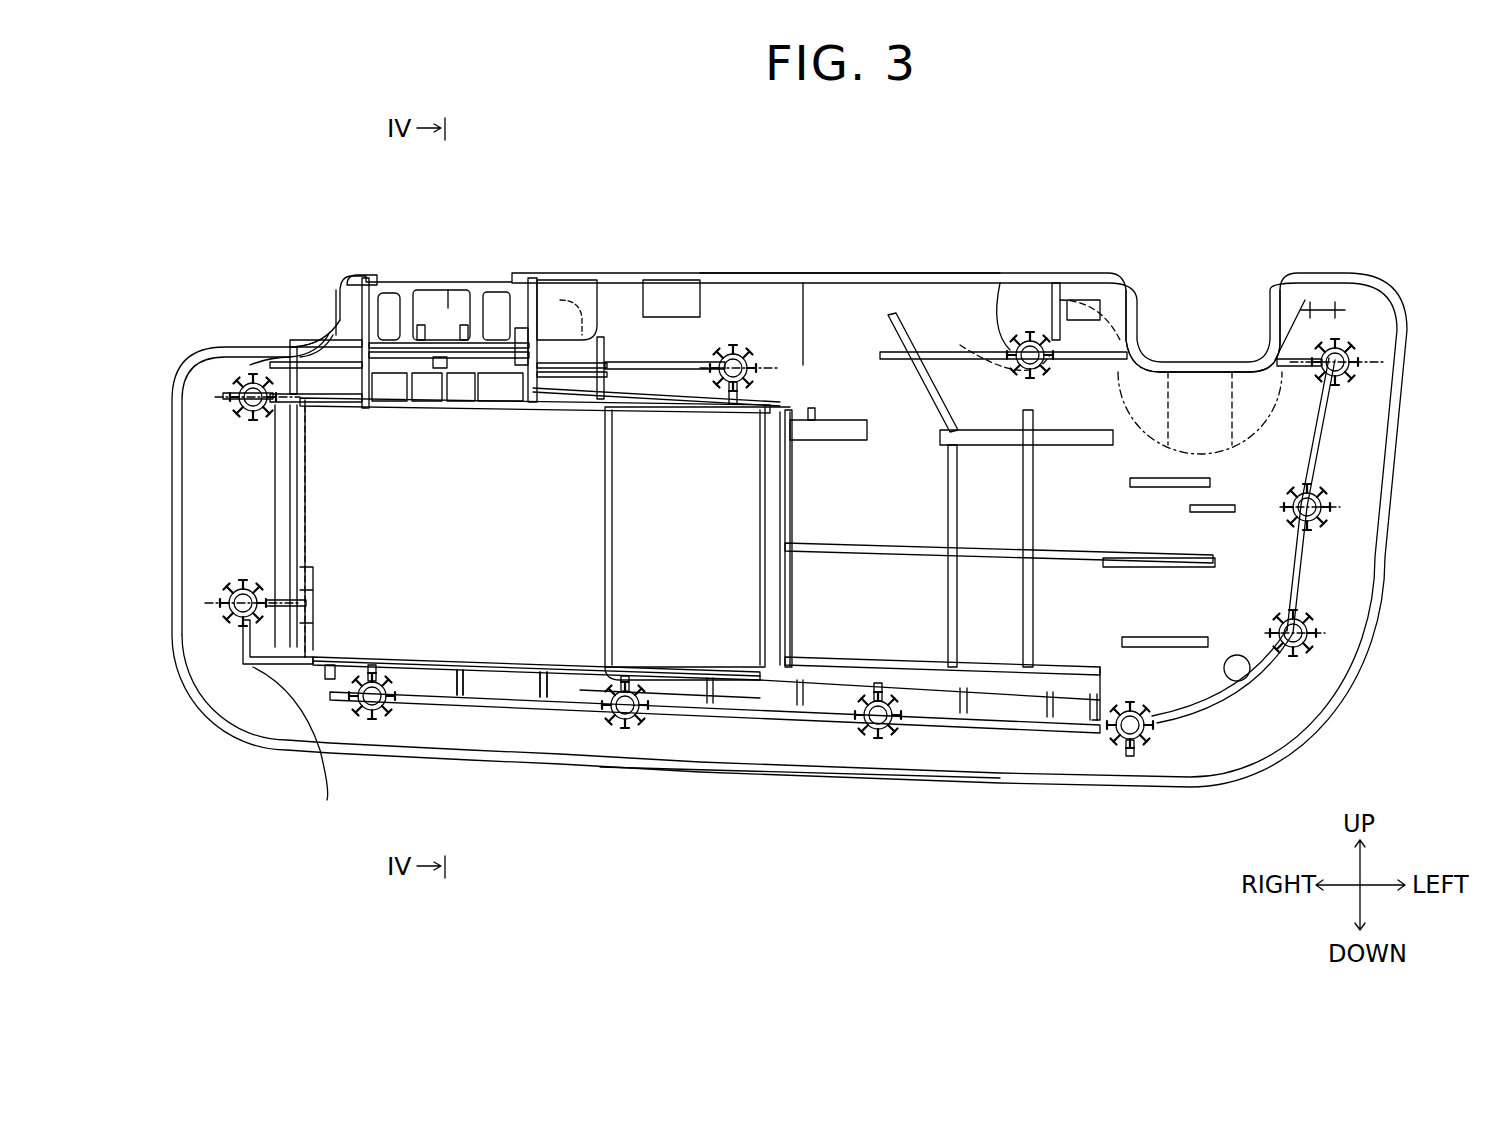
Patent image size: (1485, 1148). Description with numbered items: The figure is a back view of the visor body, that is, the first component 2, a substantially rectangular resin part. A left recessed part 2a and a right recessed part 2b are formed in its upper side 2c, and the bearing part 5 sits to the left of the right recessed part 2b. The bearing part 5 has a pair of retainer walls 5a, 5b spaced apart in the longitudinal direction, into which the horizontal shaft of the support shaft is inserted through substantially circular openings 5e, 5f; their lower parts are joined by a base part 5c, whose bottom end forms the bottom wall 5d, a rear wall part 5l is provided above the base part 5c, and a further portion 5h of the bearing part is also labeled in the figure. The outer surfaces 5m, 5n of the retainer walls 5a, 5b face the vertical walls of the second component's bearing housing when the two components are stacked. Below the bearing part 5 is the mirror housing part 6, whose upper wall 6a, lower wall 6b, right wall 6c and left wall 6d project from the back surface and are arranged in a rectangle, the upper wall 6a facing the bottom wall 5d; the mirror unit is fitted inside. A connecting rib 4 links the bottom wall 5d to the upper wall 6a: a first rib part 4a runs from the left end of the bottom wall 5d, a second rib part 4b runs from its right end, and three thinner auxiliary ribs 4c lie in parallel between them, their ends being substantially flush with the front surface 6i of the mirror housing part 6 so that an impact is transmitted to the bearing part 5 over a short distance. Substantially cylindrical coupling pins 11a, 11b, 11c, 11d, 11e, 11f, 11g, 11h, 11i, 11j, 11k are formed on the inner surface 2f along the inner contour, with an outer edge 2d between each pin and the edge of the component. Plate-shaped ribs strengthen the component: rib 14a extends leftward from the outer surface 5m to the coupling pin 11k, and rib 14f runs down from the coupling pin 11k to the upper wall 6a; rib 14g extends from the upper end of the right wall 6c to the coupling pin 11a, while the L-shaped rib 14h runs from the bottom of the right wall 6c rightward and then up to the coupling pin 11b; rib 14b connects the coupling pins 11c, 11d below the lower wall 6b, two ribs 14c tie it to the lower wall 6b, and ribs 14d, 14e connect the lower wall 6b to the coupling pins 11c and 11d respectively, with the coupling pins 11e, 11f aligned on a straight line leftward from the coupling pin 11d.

The first component 2 is at (801, 788).
The left recessed part 2a is at (1197, 358).
The right recessed part 2b is at (336, 330).
The upper side 2c is at (862, 280).
The outer edge 2d is at (830, 760).
The inner surface 2f is at (871, 384).
The connecting rib 4 is at (436, 412).
The first rib part 4a is at (515, 402).
The second rib part 4b is at (372, 402).
The auxiliary ribs 4c is at (470, 402).
The bearing part 5 is at (487, 323).
The retainer wall 5a is at (522, 333).
The retainer wall 5b is at (368, 276).
The base part 5c is at (422, 334).
The bottom wall 5d is at (322, 355).
The opening 5e is at (545, 345).
The opening 5f is at (386, 330).
The clamp rail 5h is at (620, 345).
The rear wall part 5l is at (450, 334).
The outer surface 5m is at (584, 345).
The outer surface 5n is at (332, 330).
The mirror housing part 6 is at (290, 748).
The upper wall 6a is at (563, 408).
The lower wall 6b is at (515, 665).
The right wall 6c is at (302, 530).
The left wall 6d is at (765, 510).
The front surface 6i is at (510, 560).
The coupling pin 11a is at (240, 385).
The coupling pin 11b is at (230, 610).
The coupling pin 11c is at (378, 706).
The coupling pin 11d is at (632, 720).
The coupling pin 11e is at (881, 733).
The coupling pin 11f is at (1131, 745).
The coupling pin 11g is at (1308, 628).
The coupling pin 11h is at (1318, 528).
The coupling pin 11i is at (1350, 348).
The coupling pin 11j is at (1022, 342).
The coupling pin 11k is at (737, 350).
The rib 14a is at (669, 330).
The rib 14b is at (520, 695).
The ribs 14c is at (475, 692).
The rib 14d is at (333, 680).
The rib 14e is at (580, 697).
The rib 14f is at (800, 360).
The rib 14g is at (252, 368).
The rib 14h is at (243, 668).